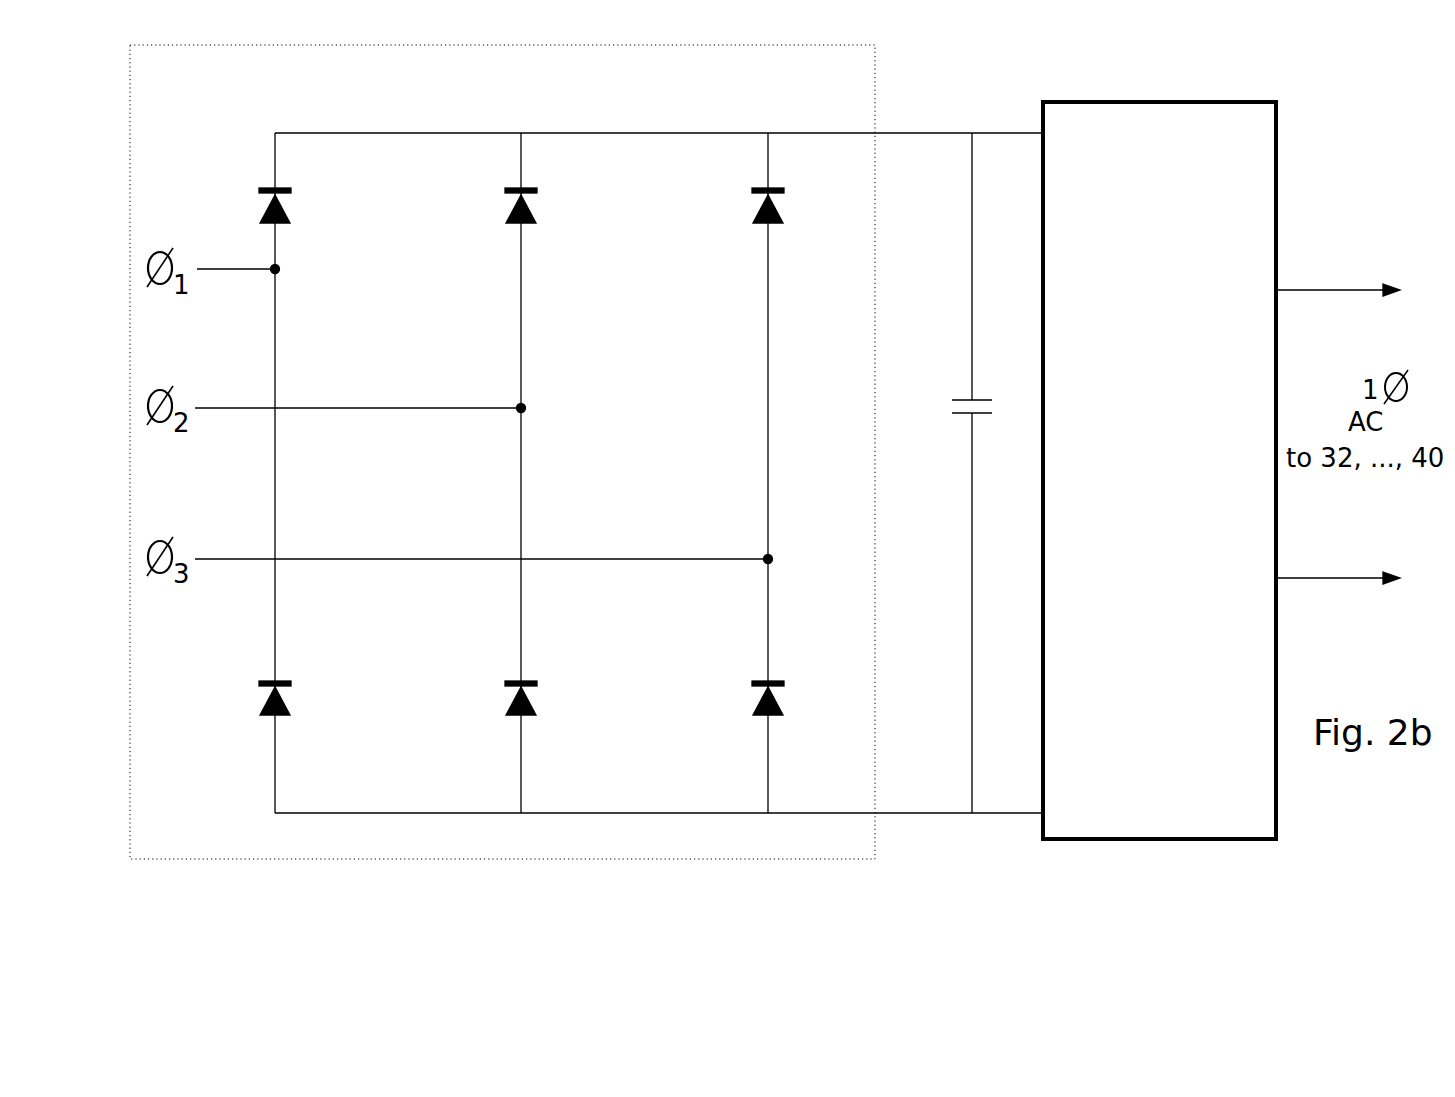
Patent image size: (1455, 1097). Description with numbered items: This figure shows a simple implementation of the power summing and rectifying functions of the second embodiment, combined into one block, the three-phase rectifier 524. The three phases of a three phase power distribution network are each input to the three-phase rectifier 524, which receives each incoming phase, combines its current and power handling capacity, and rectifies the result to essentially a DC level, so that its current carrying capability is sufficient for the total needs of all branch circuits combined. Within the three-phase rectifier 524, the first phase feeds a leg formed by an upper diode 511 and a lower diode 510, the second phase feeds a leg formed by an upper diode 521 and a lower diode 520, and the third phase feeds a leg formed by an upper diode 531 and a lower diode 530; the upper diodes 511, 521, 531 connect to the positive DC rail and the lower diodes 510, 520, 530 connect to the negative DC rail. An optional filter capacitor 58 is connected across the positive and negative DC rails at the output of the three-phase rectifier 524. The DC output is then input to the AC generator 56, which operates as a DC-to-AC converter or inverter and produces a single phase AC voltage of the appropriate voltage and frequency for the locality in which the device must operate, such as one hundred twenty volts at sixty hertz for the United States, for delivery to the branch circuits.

The AC generator 56 is at (1118, 100).
The filter capacitor 58 is at (963, 392).
The diode D10 510 is at (300, 675).
The diode D11 511 is at (294, 183).
The diode D20 520 is at (535, 673).
The diode D21 521 is at (538, 176).
The diode D30 530 is at (782, 673).
The diode D31 531 is at (785, 176).
The 3-phase rectifier 524 is at (393, 859).